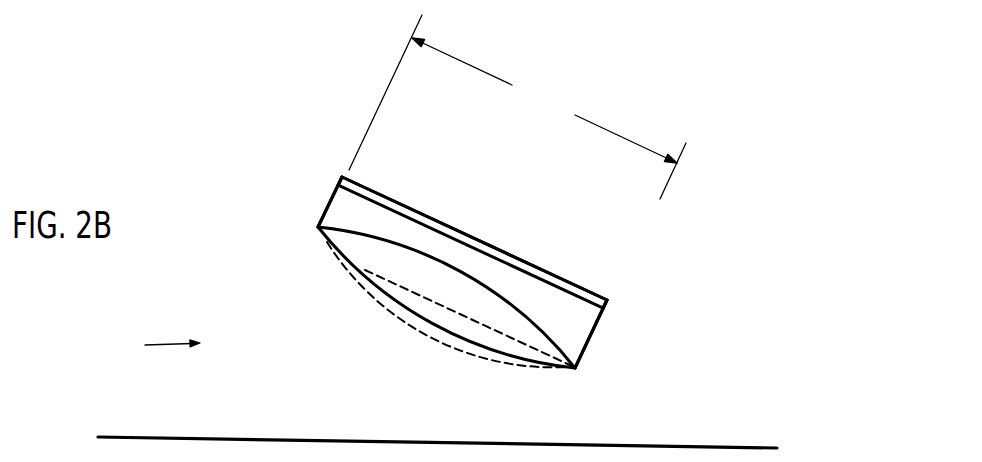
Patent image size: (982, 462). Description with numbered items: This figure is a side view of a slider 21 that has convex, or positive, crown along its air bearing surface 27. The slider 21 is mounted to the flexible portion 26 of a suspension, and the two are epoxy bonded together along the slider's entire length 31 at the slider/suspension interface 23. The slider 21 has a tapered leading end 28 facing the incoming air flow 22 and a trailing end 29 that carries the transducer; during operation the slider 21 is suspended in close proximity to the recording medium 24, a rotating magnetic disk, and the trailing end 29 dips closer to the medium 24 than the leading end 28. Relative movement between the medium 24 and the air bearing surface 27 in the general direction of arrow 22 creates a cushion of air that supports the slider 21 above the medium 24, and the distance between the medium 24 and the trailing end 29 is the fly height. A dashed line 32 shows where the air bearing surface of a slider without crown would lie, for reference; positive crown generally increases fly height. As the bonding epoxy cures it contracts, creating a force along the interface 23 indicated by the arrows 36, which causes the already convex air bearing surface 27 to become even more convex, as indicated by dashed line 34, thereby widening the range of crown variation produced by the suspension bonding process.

The slider 21 is at (462, 272).
The incoming air flow 22 is at (158, 342).
The slider/suspension interface 23 is at (516, 256).
The recording medium 24 is at (152, 436).
The flexible portion of suspension 26 is at (456, 228).
The air bearing surface 27 is at (430, 326).
The tapered leading end 28 is at (328, 206).
The trailing end 29 is at (587, 344).
The slider length 31 is at (517, 107).
The dashed line representing ABS of slider without crown 32 is at (480, 323).
The dashed line of increased convex curvature 34 is at (475, 355).
The arrows indicating contracting force 36 is at (341, 181).